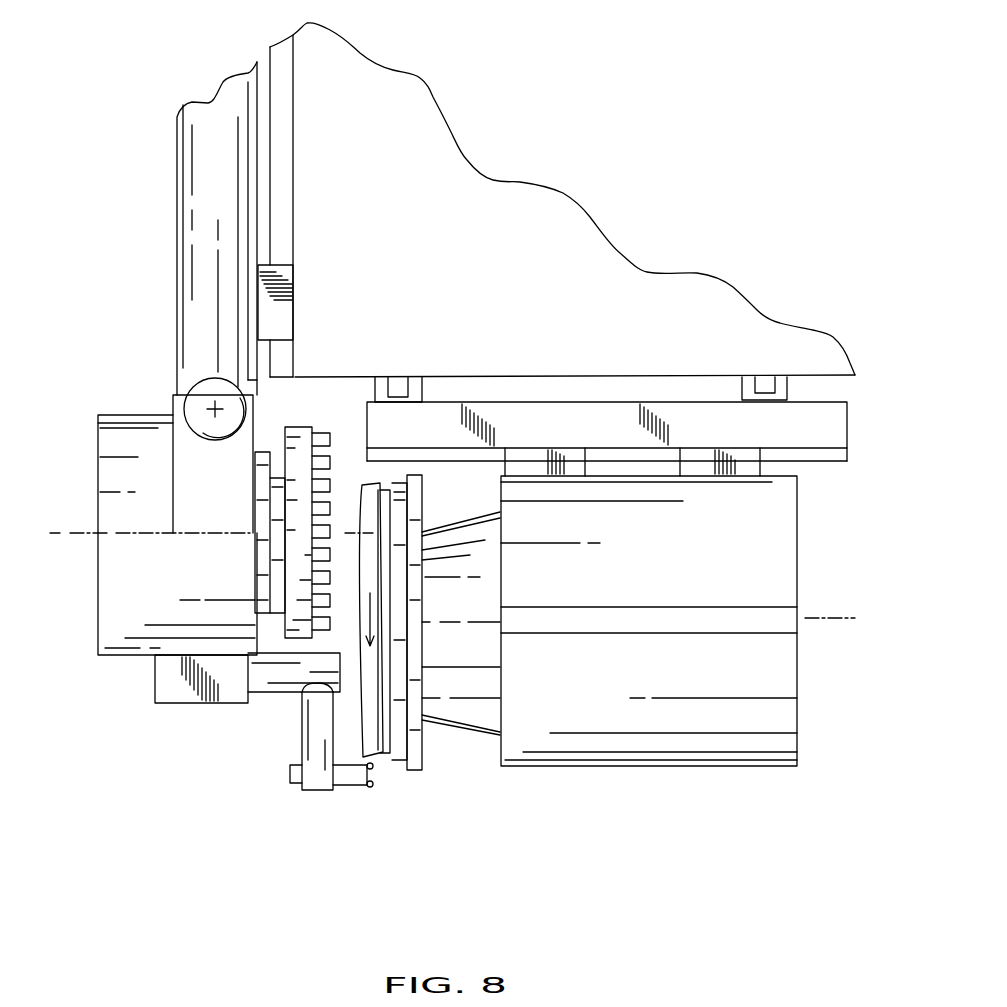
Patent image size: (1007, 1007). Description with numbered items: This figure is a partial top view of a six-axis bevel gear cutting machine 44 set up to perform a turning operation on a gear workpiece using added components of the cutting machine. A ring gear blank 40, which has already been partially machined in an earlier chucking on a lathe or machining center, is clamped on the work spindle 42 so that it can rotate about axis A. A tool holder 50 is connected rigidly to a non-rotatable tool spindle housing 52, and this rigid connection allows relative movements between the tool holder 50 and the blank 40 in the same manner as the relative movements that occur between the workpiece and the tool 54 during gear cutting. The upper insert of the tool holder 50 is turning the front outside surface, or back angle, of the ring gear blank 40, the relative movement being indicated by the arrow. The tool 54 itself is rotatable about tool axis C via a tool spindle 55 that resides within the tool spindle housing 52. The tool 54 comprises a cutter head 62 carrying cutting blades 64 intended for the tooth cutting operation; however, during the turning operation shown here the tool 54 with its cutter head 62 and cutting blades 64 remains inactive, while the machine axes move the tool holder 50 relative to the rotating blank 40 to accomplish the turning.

The ring gear blank 40 is at (373, 723).
The work spindle 42 is at (400, 727).
The six-axis CNC bevel gear generating machine 44 is at (500, 267).
The tool holder 50 is at (270, 702).
The tool spindle housing 52 is at (118, 610).
The tool 54 is at (297, 458).
The tool spindle 55 is at (258, 562).
The cutter head 62 is at (300, 435).
The cutting blades 64 is at (330, 430).
The axis A is at (842, 618).
The tool axis C is at (58, 533).